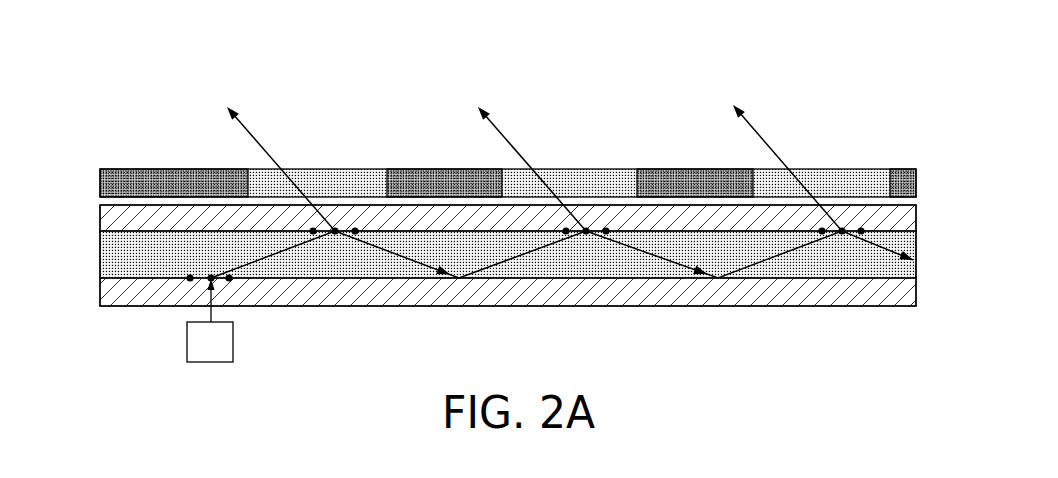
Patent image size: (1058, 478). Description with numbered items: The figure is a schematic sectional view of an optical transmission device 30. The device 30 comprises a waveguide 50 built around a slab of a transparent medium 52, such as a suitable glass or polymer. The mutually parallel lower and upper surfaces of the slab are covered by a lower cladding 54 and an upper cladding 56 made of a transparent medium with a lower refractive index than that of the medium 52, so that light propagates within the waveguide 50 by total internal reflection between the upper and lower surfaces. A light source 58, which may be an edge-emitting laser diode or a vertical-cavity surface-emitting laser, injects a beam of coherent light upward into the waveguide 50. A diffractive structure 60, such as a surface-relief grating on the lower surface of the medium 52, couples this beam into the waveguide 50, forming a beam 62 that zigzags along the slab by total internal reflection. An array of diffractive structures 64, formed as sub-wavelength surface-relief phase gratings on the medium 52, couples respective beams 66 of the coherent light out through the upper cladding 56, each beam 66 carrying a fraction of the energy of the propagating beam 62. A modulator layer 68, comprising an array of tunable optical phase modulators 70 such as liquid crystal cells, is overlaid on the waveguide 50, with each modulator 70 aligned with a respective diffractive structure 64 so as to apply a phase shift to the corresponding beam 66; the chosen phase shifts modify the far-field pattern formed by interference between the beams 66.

The optical transmission device 30 is at (864, 112).
The waveguide 50 is at (922, 205).
The transparent medium 52 is at (100, 253).
The lower cladding 54 is at (100, 288).
The upper cladding 56 is at (100, 218).
The light source 58 is at (187, 350).
The diffractive structure 60 is at (211, 278).
The beam 62 is at (528, 253).
The diffractive structures 64 is at (313, 231).
The beams 66 is at (250, 126).
The modulator layer 68 is at (100, 182).
The tunable optical phase modulators 70 is at (325, 169).